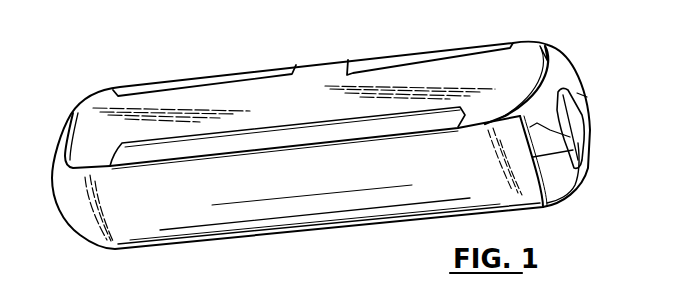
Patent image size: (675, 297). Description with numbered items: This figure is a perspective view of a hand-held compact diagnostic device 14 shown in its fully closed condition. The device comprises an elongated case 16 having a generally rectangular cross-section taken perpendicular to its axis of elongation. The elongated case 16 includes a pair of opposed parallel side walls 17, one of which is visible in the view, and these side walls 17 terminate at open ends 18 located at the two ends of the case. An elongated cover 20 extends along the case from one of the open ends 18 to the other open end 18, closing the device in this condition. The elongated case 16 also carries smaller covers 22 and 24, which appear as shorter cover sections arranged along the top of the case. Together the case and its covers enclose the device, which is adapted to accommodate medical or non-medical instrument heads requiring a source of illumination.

The hand-held compact diagnostic device 14 is at (525, 31).
The elongated case 16 is at (325, 73).
The side walls 17 is at (527, 72).
The open ends 18 is at (574, 138).
The elongated cover 20 is at (362, 215).
The smaller cover 22 is at (201, 71).
The smaller cover 24 is at (397, 63).